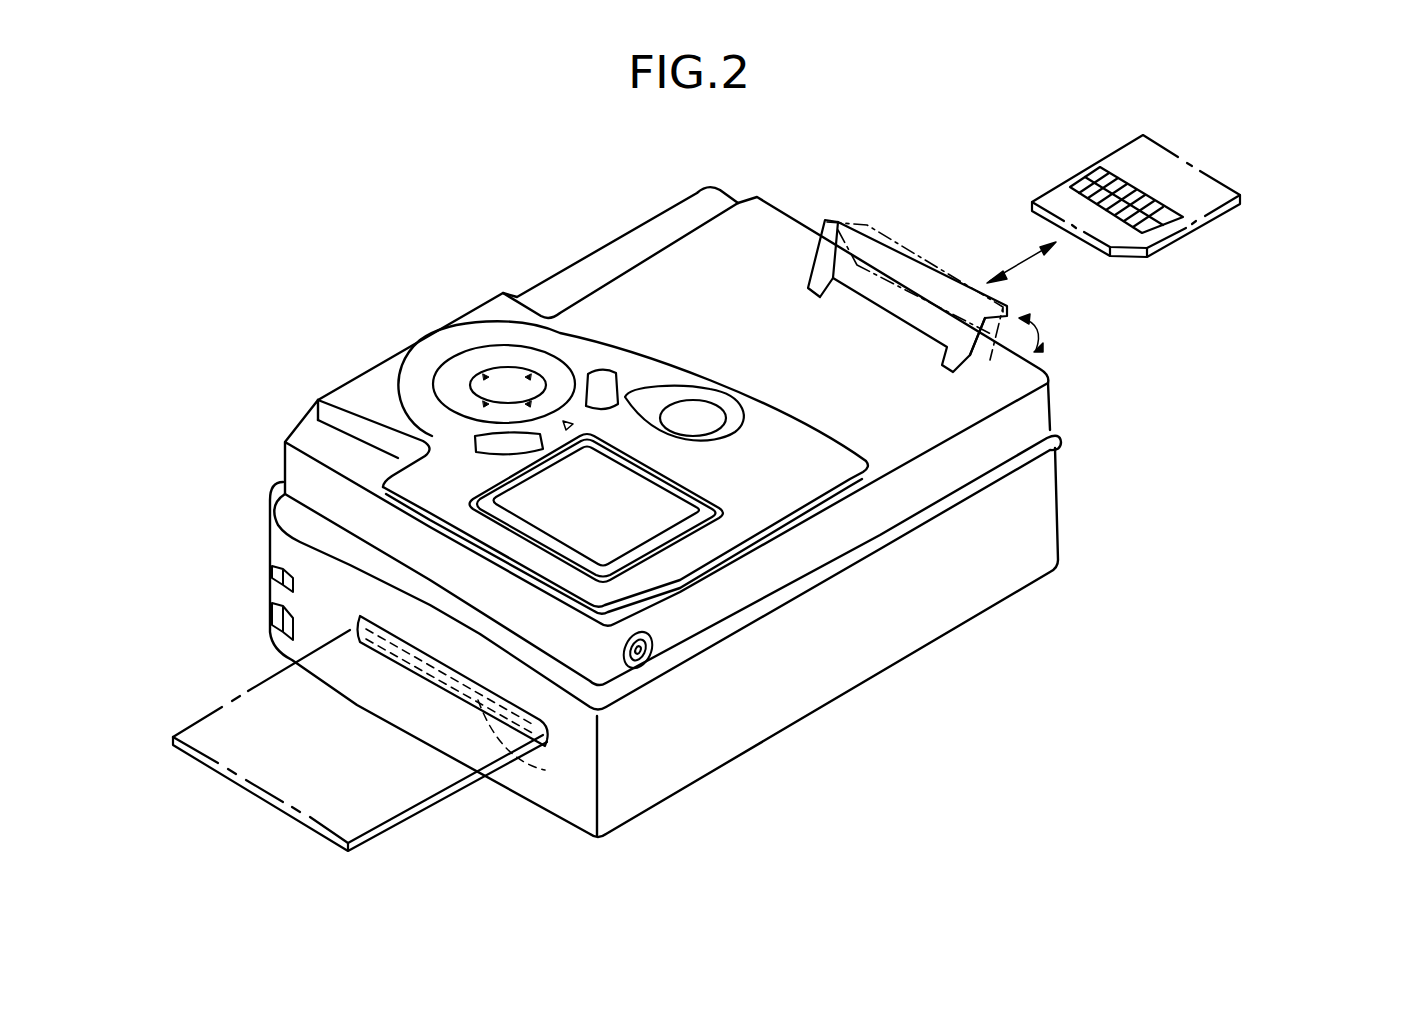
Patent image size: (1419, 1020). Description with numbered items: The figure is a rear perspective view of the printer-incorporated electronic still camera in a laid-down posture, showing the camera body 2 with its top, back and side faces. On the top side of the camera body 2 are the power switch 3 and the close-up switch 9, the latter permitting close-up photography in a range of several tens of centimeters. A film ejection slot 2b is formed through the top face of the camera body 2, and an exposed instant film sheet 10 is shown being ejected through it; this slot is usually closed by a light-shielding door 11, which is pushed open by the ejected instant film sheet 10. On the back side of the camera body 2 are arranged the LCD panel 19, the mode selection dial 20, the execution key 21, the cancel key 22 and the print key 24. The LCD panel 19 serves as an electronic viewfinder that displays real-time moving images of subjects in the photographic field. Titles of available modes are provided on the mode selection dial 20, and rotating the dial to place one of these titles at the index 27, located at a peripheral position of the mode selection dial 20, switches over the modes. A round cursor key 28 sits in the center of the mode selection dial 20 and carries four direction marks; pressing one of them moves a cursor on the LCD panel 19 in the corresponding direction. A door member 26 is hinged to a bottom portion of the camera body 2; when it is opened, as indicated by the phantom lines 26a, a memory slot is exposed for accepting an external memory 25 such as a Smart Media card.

The camera body 2 is at (906, 662).
The film ejection slot 2b is at (530, 783).
The power switch 3 is at (293, 584).
The close-up switch 9 is at (279, 630).
The instant film sheet 10 is at (400, 817).
The light-shielding door 11 is at (540, 743).
The LCD panel 19 is at (655, 500).
The mode selection dial 20 is at (457, 380).
The execution key 21 is at (610, 380).
The cancel key 22 is at (473, 438).
The print key 24 is at (703, 405).
The external memory 25 is at (1207, 227).
The door member 26 is at (862, 272).
The phantom lines 26a is at (923, 258).
The index 27 is at (569, 421).
The cursor key 28 is at (507, 380).